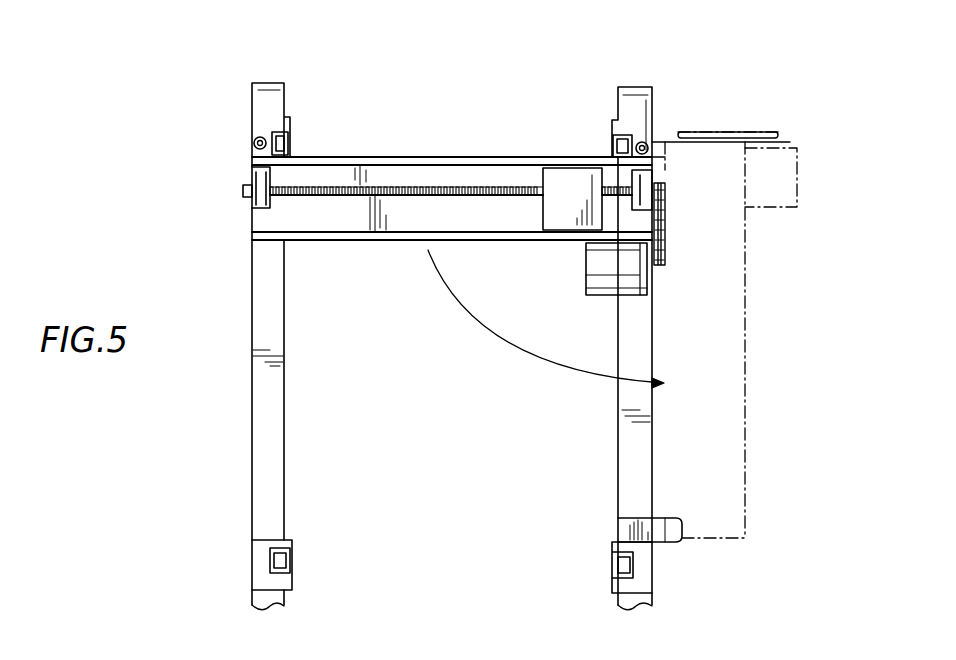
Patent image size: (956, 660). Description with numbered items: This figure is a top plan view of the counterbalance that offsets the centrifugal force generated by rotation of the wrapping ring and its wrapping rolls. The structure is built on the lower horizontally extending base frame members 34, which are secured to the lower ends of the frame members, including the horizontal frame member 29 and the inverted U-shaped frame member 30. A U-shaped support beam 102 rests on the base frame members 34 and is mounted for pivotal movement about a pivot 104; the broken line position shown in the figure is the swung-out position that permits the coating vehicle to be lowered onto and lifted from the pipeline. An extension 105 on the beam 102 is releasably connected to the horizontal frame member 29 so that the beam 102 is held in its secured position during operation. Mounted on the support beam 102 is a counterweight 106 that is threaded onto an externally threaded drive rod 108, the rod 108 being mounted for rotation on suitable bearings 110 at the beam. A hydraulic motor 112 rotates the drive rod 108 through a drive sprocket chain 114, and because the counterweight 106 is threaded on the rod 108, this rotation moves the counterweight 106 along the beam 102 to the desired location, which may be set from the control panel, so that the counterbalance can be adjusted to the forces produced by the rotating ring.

The horizontal frame member 29 is at (289, 140).
The inverted U-shaped frame member 30 is at (292, 560).
The base frame member 34 is at (284, 331).
The U-shaped support beam 102 is at (407, 242).
The pivot 104 is at (647, 143).
The extension 105 is at (253, 150).
The counterweight 106 is at (557, 224).
The externally threaded drive rod 108 is at (445, 185).
The bearings 110 is at (255, 210).
The hydraulic motor 112 is at (596, 295).
The drive sprocket chain 114 is at (757, 130).